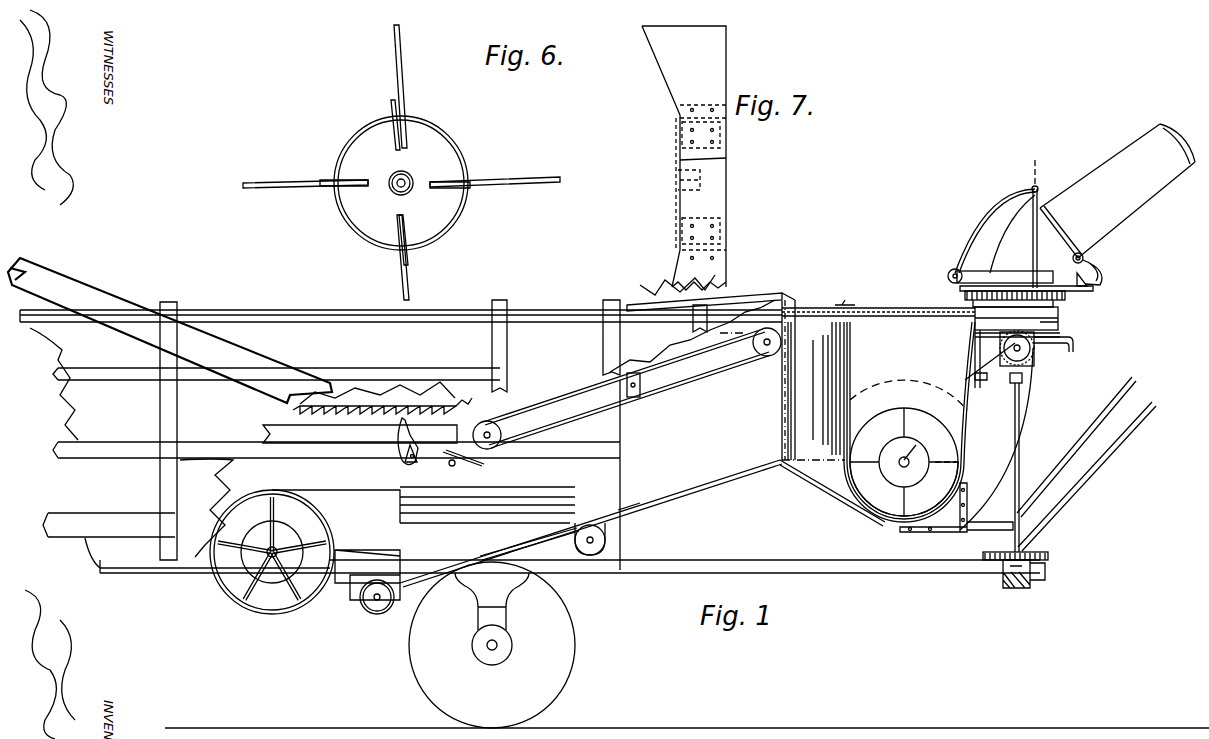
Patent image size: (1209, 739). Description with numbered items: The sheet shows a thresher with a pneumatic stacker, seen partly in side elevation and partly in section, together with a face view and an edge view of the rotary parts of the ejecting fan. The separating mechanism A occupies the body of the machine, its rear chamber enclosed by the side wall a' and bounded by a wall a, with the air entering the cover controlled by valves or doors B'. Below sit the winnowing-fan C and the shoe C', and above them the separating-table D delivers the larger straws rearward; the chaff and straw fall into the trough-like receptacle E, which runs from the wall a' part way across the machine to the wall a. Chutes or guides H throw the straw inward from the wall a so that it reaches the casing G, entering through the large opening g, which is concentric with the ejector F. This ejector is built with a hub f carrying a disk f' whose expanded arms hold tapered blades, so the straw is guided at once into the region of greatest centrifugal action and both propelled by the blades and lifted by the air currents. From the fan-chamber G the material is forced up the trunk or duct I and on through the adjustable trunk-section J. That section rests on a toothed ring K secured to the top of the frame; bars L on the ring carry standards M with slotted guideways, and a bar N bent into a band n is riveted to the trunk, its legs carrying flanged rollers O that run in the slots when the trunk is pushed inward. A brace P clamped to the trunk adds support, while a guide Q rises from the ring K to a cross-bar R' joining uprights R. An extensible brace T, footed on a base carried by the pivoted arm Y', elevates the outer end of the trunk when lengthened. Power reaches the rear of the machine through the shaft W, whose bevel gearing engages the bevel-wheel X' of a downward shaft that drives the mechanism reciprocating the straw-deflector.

In FIG. 1, the separating mechanism A is at (530, 436).
In FIG. 1, the wall a is at (867, 359).
In FIG. 1, the side wall a' is at (591, 435).
In FIG. 1, the valves or doors B' is at (878, 297).
In FIG. 1, the winnowing-fan C is at (415, 497).
In FIG. 1, the shoe C' is at (391, 432).
In FIG. 1, the separating-table D is at (623, 388).
In FIG. 1, the receptacle E is at (830, 493).
In FIG. 1, the ejector F is at (908, 448).
In FIG. 6, the ejector F is at (401, 145).
In FIG. 7, the ejector F is at (699, 158).
In FIG. 1, the casing or box G is at (850, 505).
In FIG. 1, the opening g is at (880, 500).
In FIG. 1, the chutes or guides H is at (808, 391).
In FIG. 1, the trunk or duct I is at (1053, 358).
In FIG. 1, the adjustable trunk-section J is at (1117, 191).
In FIG. 1, the toothed ring-like plate K is at (1066, 296).
In FIG. 1, the bars L is at (1097, 278).
In FIG. 1, the standards M is at (1092, 262).
In FIG. 1, the bar bent to form a band N is at (1061, 226).
In FIG. 1, the band n is at (1072, 217).
In FIG. 1, the antifriction wheels or rollers O is at (1082, 252).
In FIG. 1, the brace P is at (1000, 280).
In FIG. 1, the guide Q is at (1010, 195).
In FIG. 1, the uprights R is at (1045, 225).
In FIG. 1, the cross-bar R' is at (1030, 162).
In FIG. 1, the extensible brace T is at (1090, 420).
In FIG. 1, the shaft W is at (1020, 440).
In FIG. 1, the bevel-wheel X' is at (1003, 390).
In FIG. 1, the arm Y' is at (956, 507).
In FIG. 6, the hub f is at (405, 179).
In FIG. 7, the hub f is at (670, 177).
In FIG. 6, the disk or radial arms f' is at (405, 182).
In FIG. 7, the disk or radial arms f' is at (718, 182).